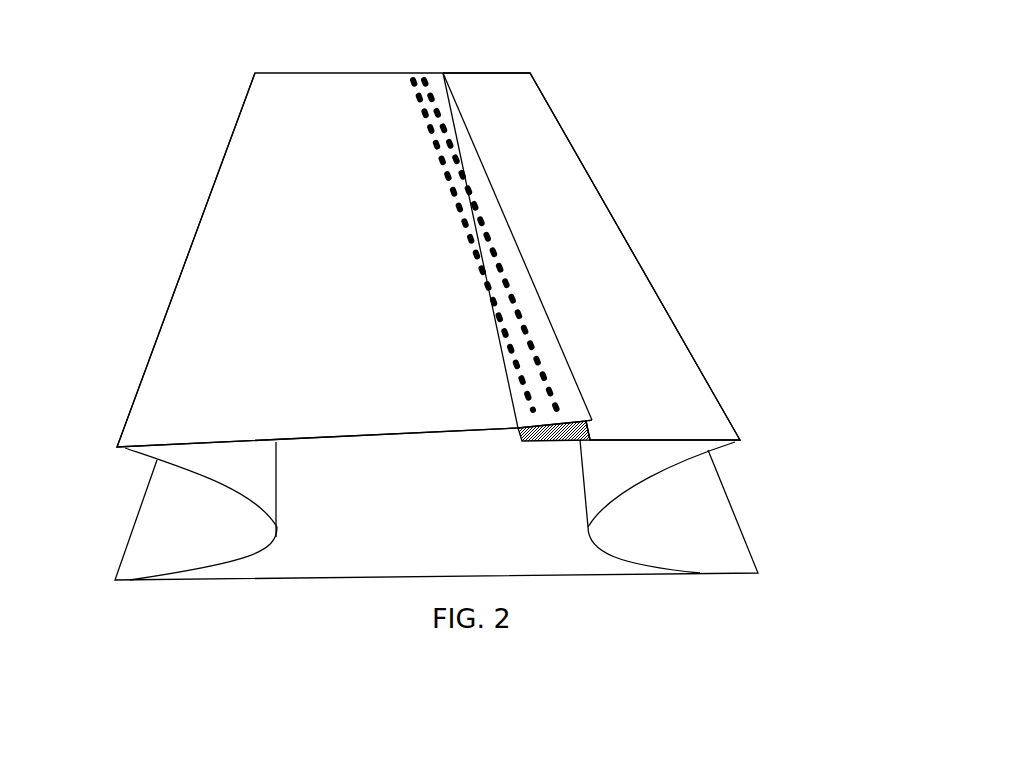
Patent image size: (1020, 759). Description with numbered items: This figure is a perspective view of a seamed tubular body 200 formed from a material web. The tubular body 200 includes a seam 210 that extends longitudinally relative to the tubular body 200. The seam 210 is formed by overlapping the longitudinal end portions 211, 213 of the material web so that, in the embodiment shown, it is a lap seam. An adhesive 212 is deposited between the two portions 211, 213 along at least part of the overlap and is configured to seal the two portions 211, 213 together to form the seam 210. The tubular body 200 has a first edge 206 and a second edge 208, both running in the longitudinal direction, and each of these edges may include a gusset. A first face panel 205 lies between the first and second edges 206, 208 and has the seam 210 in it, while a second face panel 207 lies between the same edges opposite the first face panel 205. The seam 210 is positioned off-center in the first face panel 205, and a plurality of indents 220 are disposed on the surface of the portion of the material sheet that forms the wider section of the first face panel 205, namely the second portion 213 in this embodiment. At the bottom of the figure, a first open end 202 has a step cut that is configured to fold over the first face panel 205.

The tubular body 200 is at (365, 117).
The first open end 202 is at (313, 610).
The first face panel 205 is at (393, 187).
The first edge 206 is at (735, 512).
The second face panel 207 is at (488, 538).
The second edge 208 is at (138, 505).
The seam 210 is at (573, 380).
The first longitudinal end portion 211 is at (553, 312).
The adhesive 212 is at (580, 435).
The second longitudinal end portion 213 is at (483, 302).
The plurality of indents 220 is at (505, 282).